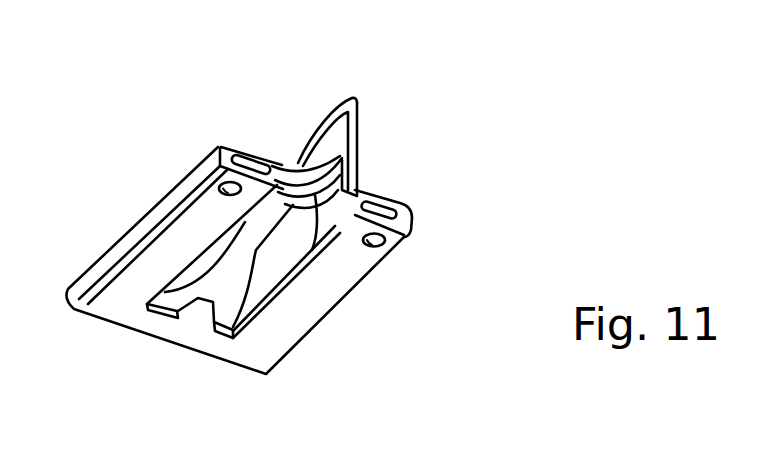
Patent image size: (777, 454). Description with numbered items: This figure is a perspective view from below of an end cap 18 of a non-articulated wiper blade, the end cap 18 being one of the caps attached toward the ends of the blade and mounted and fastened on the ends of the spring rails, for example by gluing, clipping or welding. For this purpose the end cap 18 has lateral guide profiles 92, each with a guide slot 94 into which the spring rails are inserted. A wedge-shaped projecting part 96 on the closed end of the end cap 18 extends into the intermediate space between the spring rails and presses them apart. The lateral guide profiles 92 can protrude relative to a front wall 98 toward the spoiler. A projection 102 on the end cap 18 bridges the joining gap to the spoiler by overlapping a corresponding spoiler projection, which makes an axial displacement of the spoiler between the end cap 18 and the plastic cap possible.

The end cap 18 is at (305, 146).
The guide profile 92 is at (417, 228).
The guide slot 94 is at (402, 207).
The wedge-shaped projecting part 96 is at (203, 321).
The front wall 98 is at (357, 118).
The projection 102 is at (342, 158).